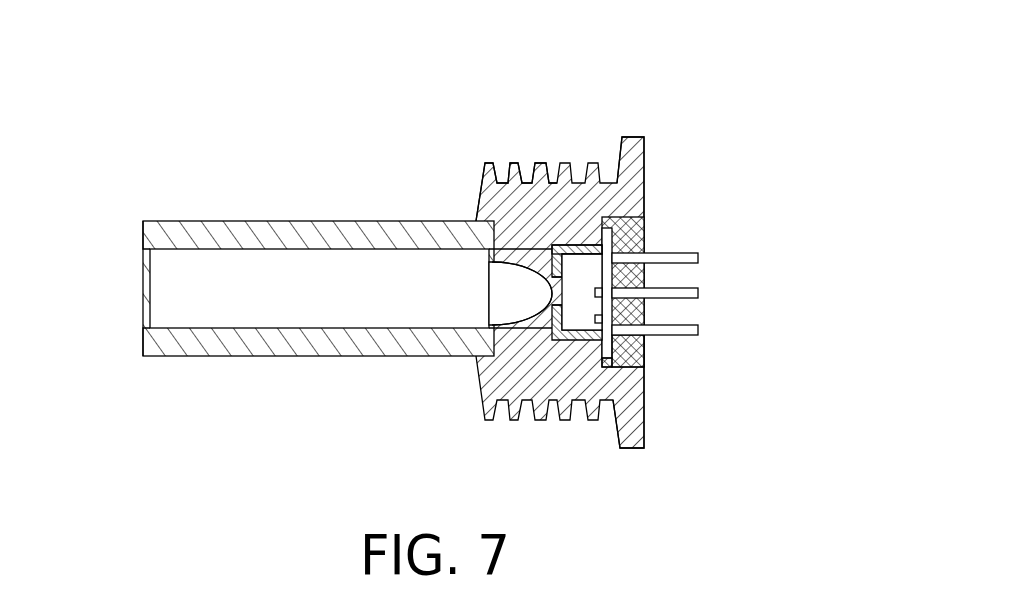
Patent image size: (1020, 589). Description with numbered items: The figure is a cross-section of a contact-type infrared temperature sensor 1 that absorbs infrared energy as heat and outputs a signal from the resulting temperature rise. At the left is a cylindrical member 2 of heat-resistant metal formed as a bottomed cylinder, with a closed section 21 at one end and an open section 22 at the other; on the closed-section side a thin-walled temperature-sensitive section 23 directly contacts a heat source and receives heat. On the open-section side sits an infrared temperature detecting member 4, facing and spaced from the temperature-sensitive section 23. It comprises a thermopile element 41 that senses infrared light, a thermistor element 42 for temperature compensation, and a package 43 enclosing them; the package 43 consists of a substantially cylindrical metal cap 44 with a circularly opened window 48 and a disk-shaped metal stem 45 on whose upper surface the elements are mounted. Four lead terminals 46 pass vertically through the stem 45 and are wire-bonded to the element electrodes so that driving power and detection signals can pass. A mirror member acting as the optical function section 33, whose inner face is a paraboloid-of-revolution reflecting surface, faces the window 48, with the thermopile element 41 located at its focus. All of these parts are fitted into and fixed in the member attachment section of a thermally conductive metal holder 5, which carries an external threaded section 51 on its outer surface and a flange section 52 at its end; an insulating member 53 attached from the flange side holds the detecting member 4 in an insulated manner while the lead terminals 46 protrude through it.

The contact-type infrared temperature sensor 1 is at (279, 82).
The cylindrical member 2 is at (300, 229).
The closed section 21 is at (146, 305).
The open section 22 is at (508, 306).
The temperature-sensitive section 23 is at (146, 262).
The optical function section 33 is at (518, 298).
The infrared temperature detecting member 4 is at (645, 220).
The thermopile element 41 is at (603, 258).
The thermistor element 42 is at (603, 318).
The package 43 is at (571, 244).
The cap 44 is at (554, 244).
The stem 45 is at (608, 348).
The lead terminals 46 is at (678, 254).
The window 48 is at (553, 300).
The holder 5 is at (648, 167).
The external threaded section 51 is at (531, 180).
The flange section 52 is at (633, 427).
The insulating member 53 is at (637, 343).